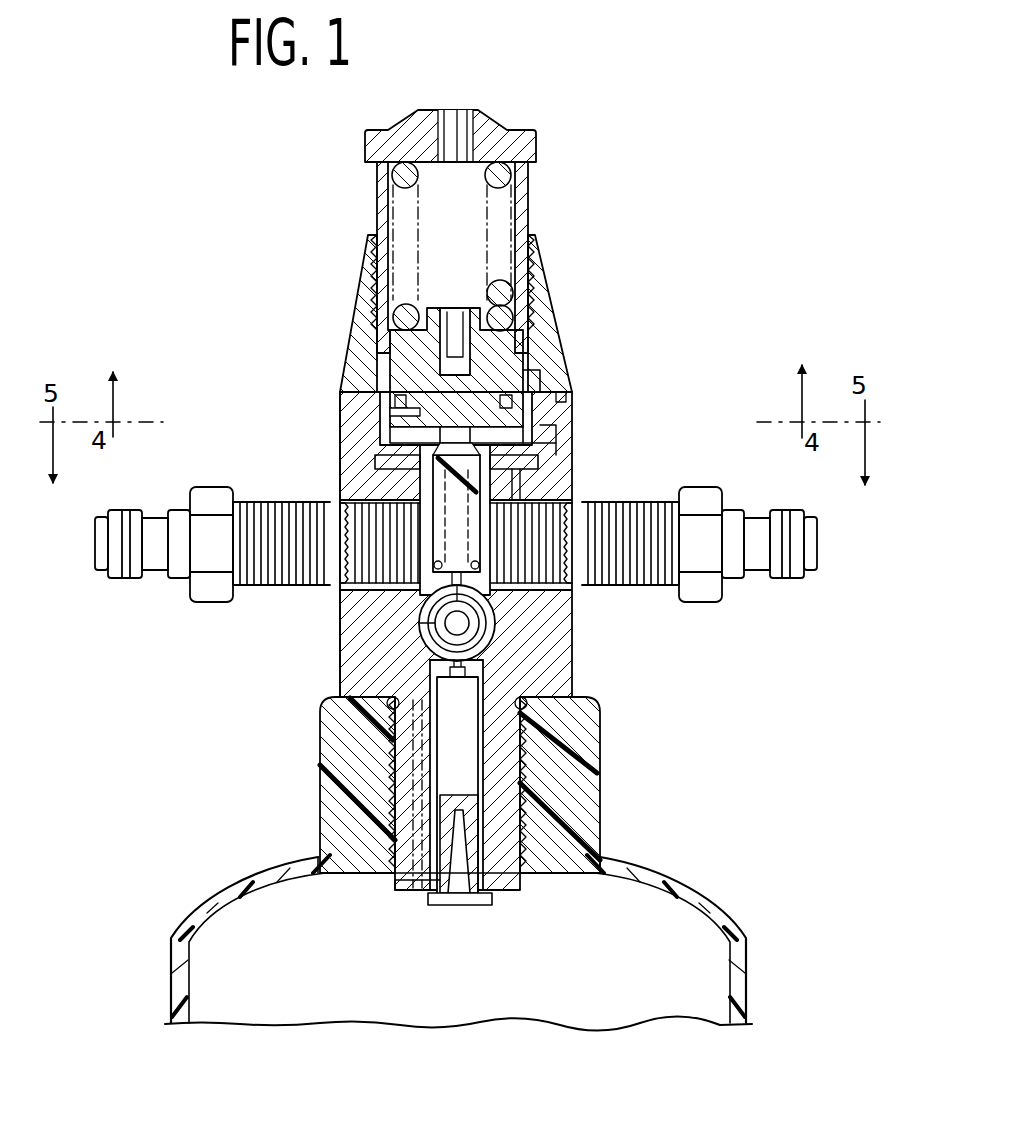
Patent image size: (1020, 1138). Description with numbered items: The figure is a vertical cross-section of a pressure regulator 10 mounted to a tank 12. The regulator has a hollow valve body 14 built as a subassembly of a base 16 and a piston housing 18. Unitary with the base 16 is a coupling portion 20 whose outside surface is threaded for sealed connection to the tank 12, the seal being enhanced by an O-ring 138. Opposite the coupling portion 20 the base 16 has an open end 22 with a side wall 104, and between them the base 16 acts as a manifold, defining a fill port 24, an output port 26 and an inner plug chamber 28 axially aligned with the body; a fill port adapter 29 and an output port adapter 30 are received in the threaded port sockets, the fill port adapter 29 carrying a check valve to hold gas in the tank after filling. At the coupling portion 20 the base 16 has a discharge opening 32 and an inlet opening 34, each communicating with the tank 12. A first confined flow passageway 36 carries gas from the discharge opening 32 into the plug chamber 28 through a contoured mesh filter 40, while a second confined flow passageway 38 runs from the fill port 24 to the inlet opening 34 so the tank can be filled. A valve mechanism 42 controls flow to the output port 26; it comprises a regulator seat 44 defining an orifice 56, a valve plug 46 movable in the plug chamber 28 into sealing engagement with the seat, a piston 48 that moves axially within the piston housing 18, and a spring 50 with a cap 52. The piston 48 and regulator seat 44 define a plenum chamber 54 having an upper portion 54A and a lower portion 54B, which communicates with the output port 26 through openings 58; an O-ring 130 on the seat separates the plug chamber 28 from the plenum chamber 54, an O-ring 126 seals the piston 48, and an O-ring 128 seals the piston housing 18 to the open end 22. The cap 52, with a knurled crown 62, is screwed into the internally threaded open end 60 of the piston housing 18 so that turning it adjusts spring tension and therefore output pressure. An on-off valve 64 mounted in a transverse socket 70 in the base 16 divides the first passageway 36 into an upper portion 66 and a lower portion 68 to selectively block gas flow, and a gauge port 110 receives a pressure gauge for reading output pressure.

The pressure regulator 10 is at (232, 250).
The tank 12 is at (745, 960).
The valve body 14 is at (338, 456).
The base 16 is at (572, 665).
The piston housing 18 is at (540, 355).
The coupling portion 20 is at (590, 775).
The open end 22 is at (556, 462).
The fill port 24 is at (352, 578).
The output port 26 is at (520, 575).
The plug chamber 28 is at (445, 545).
The fill port adapter 29 is at (128, 555).
The output port adapter 30 is at (782, 555).
The discharge opening 32 is at (508, 893).
The inlet opening 34 is at (418, 890).
The first confined flow passageway 36 is at (560, 626).
The second confined flow passageway 38 is at (382, 738).
The contoured mesh filter 40 is at (475, 898).
The valve mechanism 42 is at (395, 410).
The regulator seat 44 is at (556, 432).
The valve plug 46 is at (540, 412).
The piston 48 is at (540, 300).
The spring 50 is at (500, 225).
The cap 52 is at (480, 140).
The plenum chamber 54 is at (540, 480).
The upper portion of plenum chamber 54A is at (400, 412).
The lower portion of plenum chamber 54B is at (400, 462).
The orifice 56 is at (420, 432).
The openings 58 is at (530, 500).
The internally threaded open end 60 is at (378, 235).
The crown 62 is at (530, 148).
The on-off valve 64 is at (422, 630).
The upper portion of first passageway 66 is at (440, 620).
The lower portion of first passageway 68 is at (580, 742).
The transverse socket 70 is at (445, 645).
The side wall 104 is at (556, 445).
The gauge port 110 is at (445, 440).
The O-ring 126 is at (532, 380).
The O-ring 128 is at (566, 395).
The O-ring 130 is at (475, 480).
The O-ring 138 is at (390, 745).